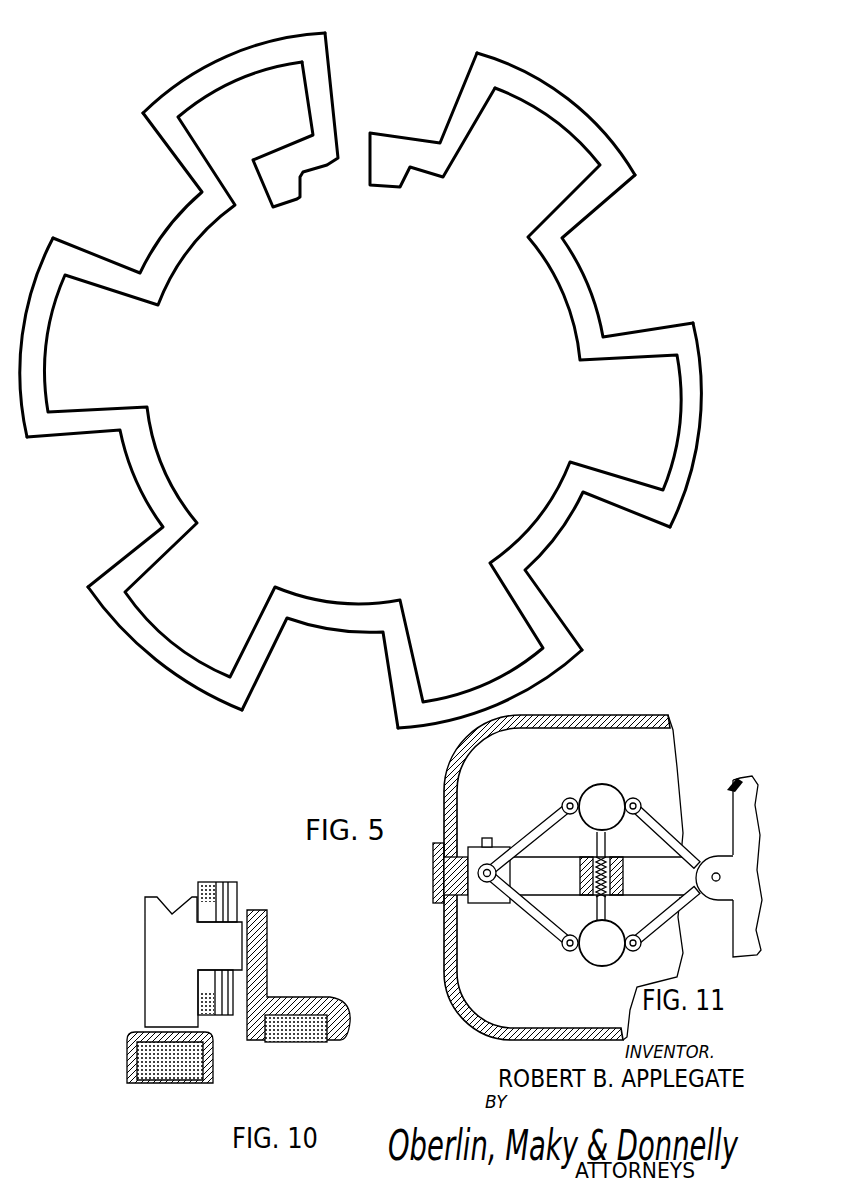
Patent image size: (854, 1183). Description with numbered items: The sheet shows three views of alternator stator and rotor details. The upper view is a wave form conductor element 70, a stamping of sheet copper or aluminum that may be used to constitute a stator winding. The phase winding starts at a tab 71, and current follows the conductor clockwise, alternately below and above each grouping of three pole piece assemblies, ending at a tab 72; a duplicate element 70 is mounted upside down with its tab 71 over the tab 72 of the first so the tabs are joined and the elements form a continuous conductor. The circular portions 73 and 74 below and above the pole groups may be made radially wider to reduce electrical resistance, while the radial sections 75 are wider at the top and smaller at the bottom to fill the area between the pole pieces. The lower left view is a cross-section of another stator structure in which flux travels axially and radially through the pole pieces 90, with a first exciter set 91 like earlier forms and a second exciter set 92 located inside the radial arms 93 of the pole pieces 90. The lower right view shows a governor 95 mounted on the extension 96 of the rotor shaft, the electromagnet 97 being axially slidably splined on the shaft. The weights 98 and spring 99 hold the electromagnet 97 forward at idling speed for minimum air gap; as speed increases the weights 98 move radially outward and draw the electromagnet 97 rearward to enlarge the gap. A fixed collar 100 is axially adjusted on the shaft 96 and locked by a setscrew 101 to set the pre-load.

In FIG. 5, the wave form conductor element 70 is at (361, 369).
In FIG. 5, the tab 71 is at (388, 185).
In FIG. 5, the tab 72 is at (287, 195).
In FIG. 5, the circular portion 73 is at (183, 243).
In FIG. 5, the circular portion 74 is at (230, 57).
In FIG. 5, the radial section 75 is at (573, 200).
In FIG. 10, the pole piece 90 is at (157, 925).
In FIG. 10, the first exciter set 91 is at (333, 1000).
In FIG. 10, the second exciter set 92 is at (128, 1062).
In FIG. 10, the radial arm 93 is at (158, 1010).
In FIG. 11, the governor 95 is at (610, 770).
In FIG. 11, the rotor shaft extension 96 is at (667, 870).
In FIG. 11, the electromagnet 97 is at (735, 783).
In FIG. 11, the weight 98 is at (602, 875).
In FIG. 11, the spring 99 is at (588, 876).
In FIG. 11, the fixed collar 100 is at (487, 901).
In FIG. 11, the setscrew 101 is at (501, 818).